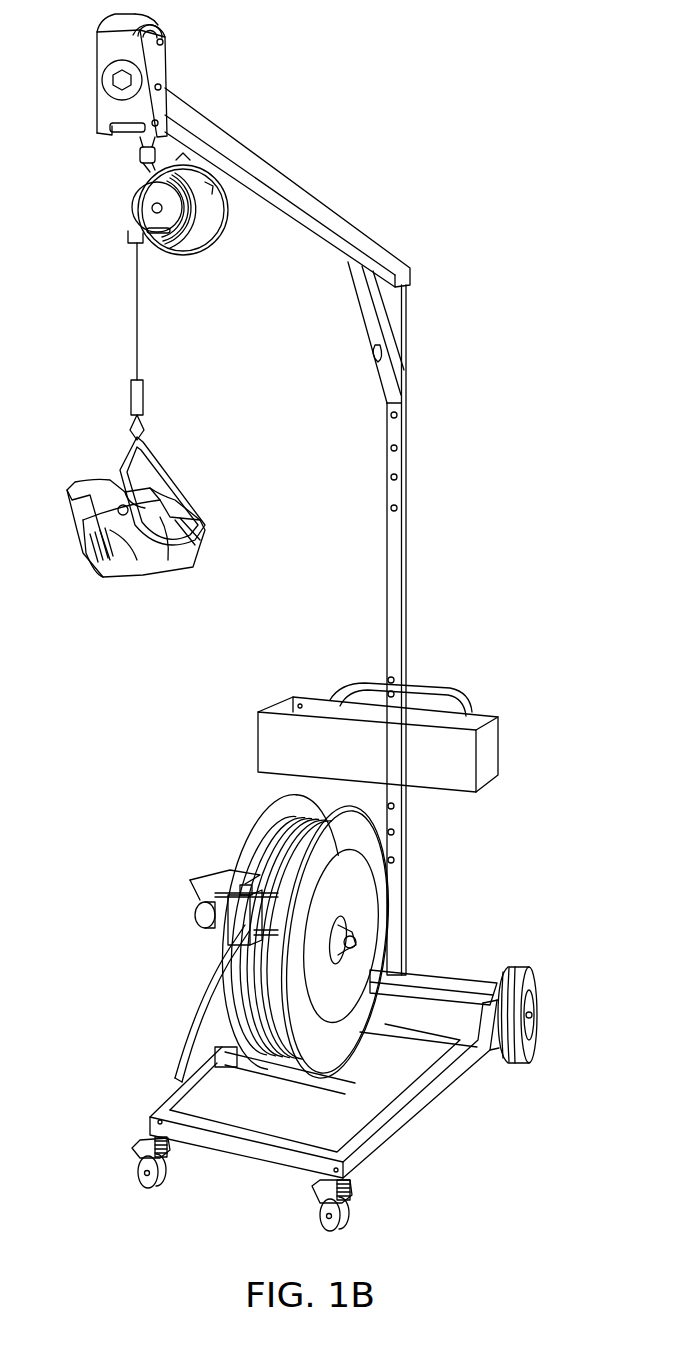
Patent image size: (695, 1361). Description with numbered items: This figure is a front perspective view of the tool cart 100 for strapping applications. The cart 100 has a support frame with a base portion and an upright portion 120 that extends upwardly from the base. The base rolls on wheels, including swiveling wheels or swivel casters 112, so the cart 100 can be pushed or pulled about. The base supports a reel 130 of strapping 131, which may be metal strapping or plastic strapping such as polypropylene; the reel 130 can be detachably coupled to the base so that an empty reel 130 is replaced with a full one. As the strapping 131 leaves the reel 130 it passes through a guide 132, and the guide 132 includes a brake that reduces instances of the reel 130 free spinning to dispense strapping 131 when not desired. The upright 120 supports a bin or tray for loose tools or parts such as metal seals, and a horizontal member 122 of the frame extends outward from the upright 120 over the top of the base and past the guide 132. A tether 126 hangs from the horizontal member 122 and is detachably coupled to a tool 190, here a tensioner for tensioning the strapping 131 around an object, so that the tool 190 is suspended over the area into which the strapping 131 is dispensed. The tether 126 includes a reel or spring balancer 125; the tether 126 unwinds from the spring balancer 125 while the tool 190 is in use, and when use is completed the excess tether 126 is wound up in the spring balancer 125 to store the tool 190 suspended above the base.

The cart 100 is at (557, 133).
The swivel casters 112 is at (134, 1175).
The upright portion 120 is at (386, 587).
The horizontal member 122 is at (304, 192).
The spring balancer 125 is at (210, 250).
The tether 126 is at (136, 309).
The reel 130 is at (255, 824).
The strapping 131 is at (196, 1011).
The guide 132 is at (198, 926).
The tool 190 is at (78, 532).